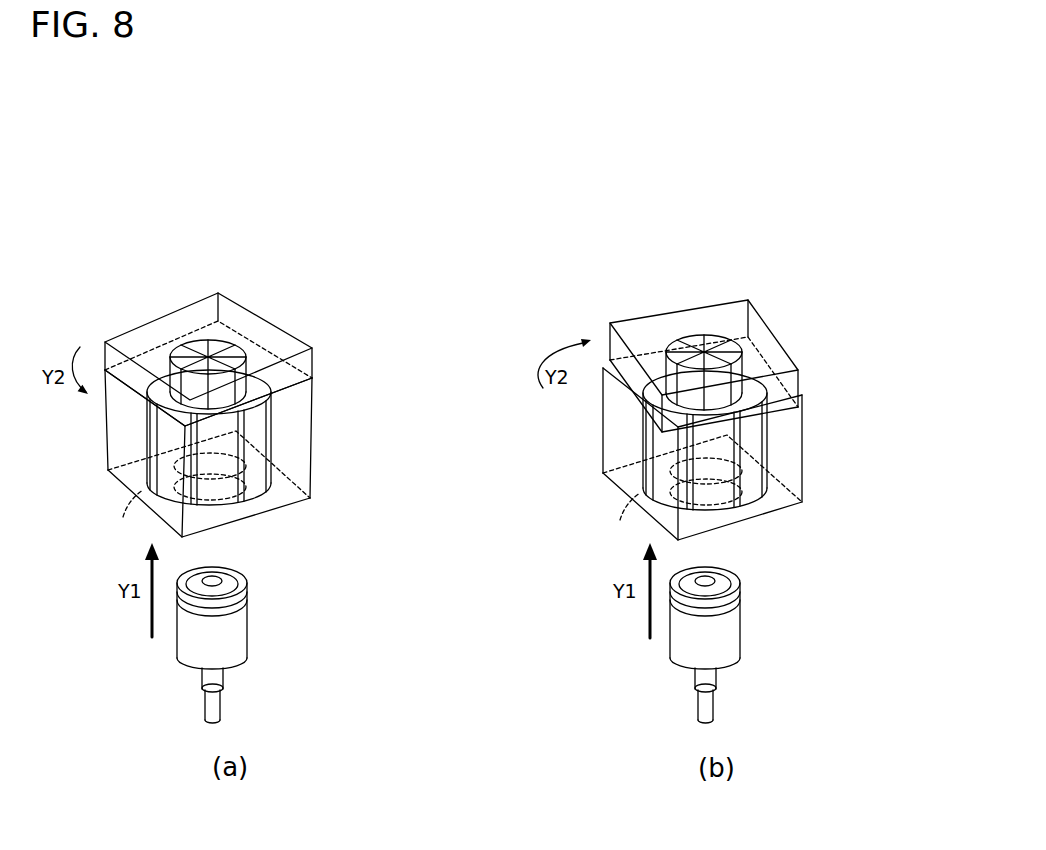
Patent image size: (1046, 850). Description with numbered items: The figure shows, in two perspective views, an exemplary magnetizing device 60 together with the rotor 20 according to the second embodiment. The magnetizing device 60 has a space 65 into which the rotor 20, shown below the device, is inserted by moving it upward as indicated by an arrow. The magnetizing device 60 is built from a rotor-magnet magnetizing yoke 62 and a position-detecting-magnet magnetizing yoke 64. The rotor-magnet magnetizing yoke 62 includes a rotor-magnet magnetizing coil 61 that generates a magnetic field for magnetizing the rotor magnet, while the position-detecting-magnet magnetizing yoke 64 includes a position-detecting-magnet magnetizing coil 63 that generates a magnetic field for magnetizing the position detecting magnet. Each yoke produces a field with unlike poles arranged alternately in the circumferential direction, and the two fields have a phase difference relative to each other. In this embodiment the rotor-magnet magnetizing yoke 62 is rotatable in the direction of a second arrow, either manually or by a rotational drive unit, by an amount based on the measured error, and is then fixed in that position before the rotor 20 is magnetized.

The magnetizing device 60 is at (150, 293).
The rotor-magnet magnetizing coil 61 is at (270, 442).
The rotor-magnet magnetizing yoke 62 is at (312, 497).
The position-detecting-magnet magnetizing coil 63 is at (188, 340).
The position-detecting-magnet magnetizing yoke 64 is at (277, 327).
The space 65 is at (140, 500).
The rotor 20 is at (248, 630).